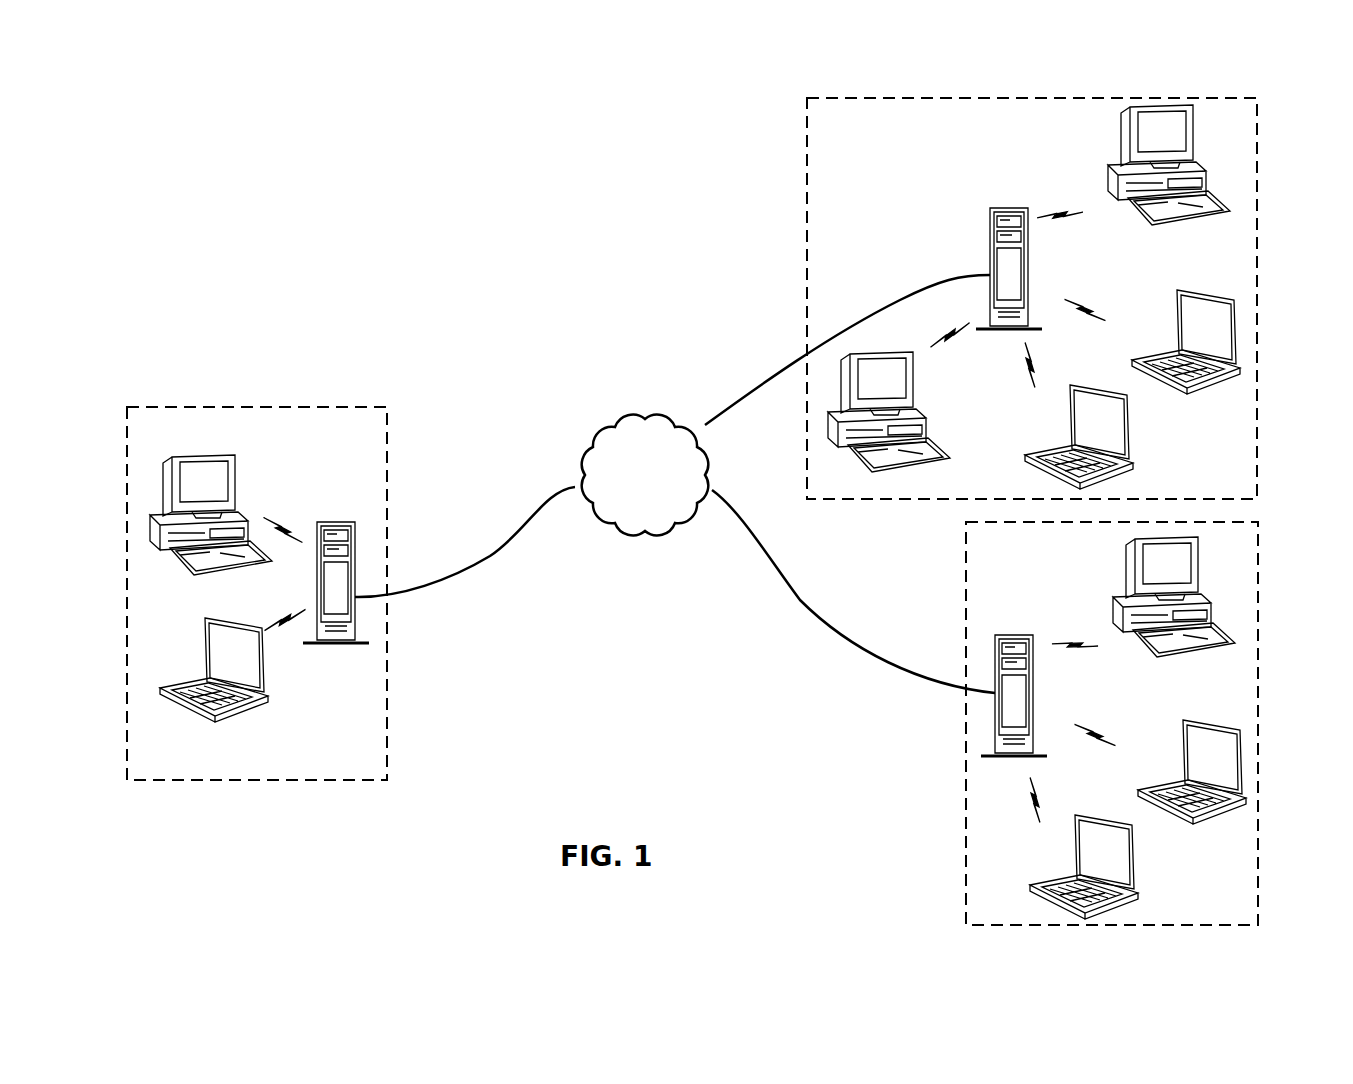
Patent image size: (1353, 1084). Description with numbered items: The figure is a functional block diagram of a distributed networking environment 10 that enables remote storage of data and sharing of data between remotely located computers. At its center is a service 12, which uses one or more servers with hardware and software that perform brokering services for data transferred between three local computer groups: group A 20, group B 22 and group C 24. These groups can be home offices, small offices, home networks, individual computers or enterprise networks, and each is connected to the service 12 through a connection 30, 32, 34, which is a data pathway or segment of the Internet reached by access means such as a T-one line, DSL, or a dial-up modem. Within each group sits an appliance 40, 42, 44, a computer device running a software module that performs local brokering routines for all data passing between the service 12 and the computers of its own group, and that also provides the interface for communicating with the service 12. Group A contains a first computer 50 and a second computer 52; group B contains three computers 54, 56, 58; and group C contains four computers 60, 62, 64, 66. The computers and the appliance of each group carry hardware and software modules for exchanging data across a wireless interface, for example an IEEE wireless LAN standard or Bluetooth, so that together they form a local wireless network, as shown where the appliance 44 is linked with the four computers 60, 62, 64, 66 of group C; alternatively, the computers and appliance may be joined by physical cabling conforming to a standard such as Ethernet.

The network environment 10 is at (387, 288).
The service 12 is at (633, 395).
The local computer group A 20 is at (313, 407).
The local computer group B 22 is at (965, 775).
The local computer group C 24 is at (805, 248).
The connection 30 is at (487, 557).
The connection 32 is at (828, 625).
The connection 34 is at (787, 365).
The appliance 40 is at (352, 632).
The appliance 42 is at (993, 635).
The appliance 44 is at (1005, 208).
The computer a1 50 is at (190, 485).
The computer a2 52 is at (218, 647).
The computer b1 54 is at (1200, 572).
The computer b2 56 is at (1228, 755).
The computer b3 58 is at (1118, 862).
The computer c1 60 is at (1190, 145).
The computer c2 62 is at (1222, 326).
The computer c3 64 is at (1115, 418).
The computer c4 66 is at (858, 390).